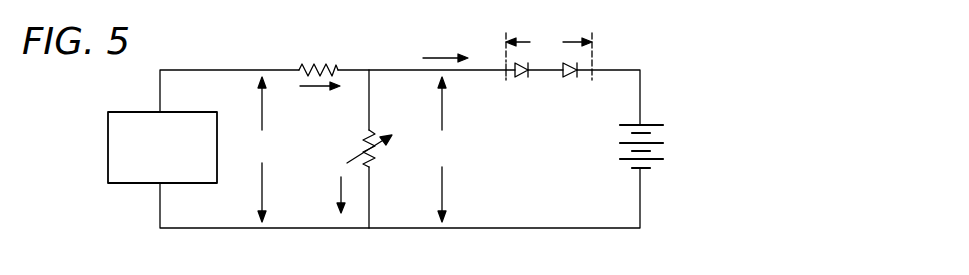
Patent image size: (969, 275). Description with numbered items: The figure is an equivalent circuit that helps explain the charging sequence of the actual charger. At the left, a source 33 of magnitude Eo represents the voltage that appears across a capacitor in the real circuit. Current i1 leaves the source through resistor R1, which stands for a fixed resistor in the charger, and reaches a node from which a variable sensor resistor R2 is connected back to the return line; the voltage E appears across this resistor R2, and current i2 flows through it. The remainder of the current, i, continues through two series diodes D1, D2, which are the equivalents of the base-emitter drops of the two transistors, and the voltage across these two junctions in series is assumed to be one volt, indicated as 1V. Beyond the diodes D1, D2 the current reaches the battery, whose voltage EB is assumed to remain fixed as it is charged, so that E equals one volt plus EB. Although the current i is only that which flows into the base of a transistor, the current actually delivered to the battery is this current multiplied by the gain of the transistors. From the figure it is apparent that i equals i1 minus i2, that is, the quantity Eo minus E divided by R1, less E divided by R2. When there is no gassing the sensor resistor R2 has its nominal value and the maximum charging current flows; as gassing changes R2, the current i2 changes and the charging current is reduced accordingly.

The source 33 is at (108, 142).
The resistor R1 is at (311, 65).
The variable sensor resistor R2 is at (366, 140).
The diode D1 is at (578, 80).
The diode D2 is at (527, 80).
The battery voltage EB is at (660, 167).
The source voltage Eo is at (263, 149).
The voltage E is at (487, 149).
The current i is at (433, 54).
The current i1 is at (320, 88).
The current i2 is at (340, 196).
The one volt drop 1V is at (549, 56).